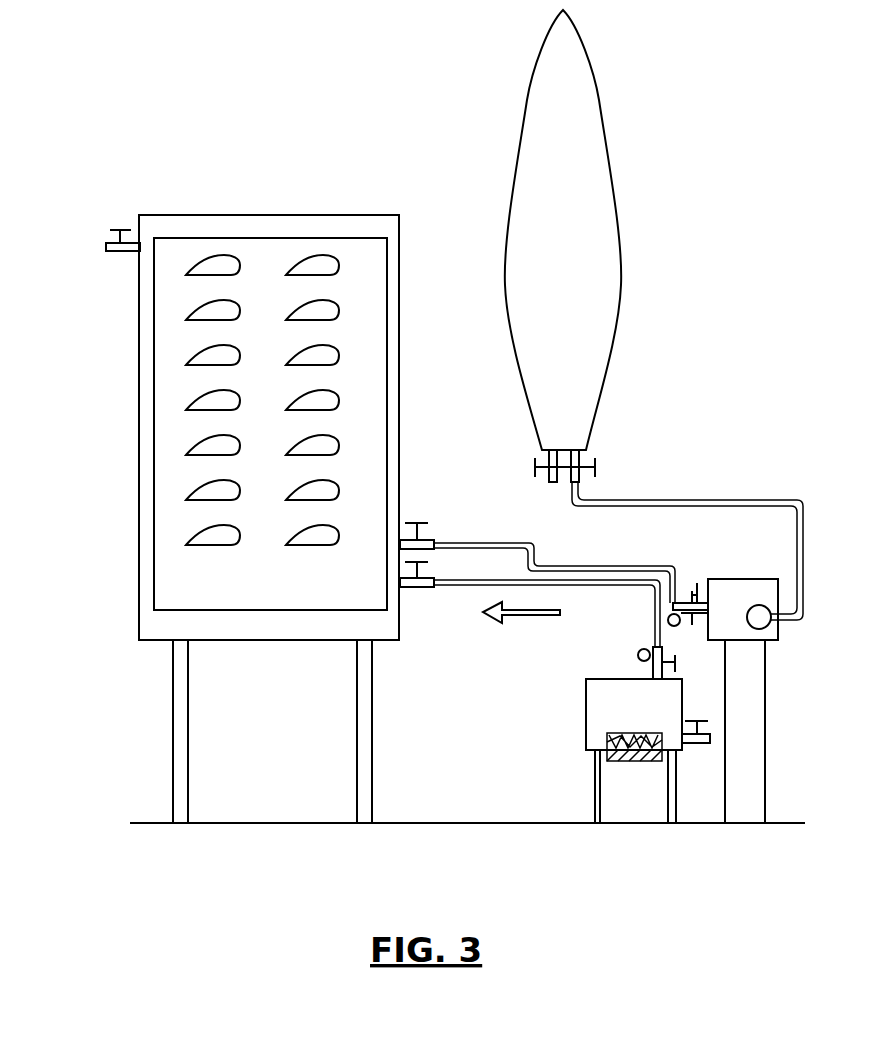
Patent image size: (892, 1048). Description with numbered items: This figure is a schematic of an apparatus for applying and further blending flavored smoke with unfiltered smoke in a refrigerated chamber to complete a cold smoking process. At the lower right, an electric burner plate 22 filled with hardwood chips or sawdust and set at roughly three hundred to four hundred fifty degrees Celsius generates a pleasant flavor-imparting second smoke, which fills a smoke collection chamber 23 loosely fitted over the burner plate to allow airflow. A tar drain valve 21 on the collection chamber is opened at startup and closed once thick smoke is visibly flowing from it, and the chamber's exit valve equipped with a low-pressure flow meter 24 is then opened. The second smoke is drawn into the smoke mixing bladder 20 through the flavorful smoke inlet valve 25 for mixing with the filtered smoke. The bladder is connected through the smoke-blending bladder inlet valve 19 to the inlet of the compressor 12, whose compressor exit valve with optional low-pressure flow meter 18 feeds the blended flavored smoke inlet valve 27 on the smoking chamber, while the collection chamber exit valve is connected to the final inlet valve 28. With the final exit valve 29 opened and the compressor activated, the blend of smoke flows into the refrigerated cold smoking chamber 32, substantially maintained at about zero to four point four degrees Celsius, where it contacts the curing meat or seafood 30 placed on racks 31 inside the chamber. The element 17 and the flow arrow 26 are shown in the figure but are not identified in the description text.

The compressor 12 is at (752, 580).
The valve stem 17 is at (695, 582).
The compressor exit valve with optional low-pressure flow meter 18 is at (678, 601).
The smoke-blending bladder inlet valve 19 is at (598, 462).
The smoke mixing bladder 20 is at (563, 230).
The tar drain valve 21 is at (700, 745).
The electric burner plate 22 is at (610, 758).
The smoke collection chamber 23 is at (634, 751).
The smoke collection chamber exit valve equipped with a low-pressure flow meter 24 is at (638, 657).
The flavorful smoke inlet valve 25 is at (535, 463).
The flow direction arrow 26 is at (508, 617).
The blended flavored smoke inlet valve 27 is at (420, 522).
The final inlet valve 28 is at (417, 588).
The final exit valve 29 is at (106, 246).
The curing meat or seafood 30 is at (316, 255).
The racks 31 is at (175, 371).
The refrigerated cold smoking chamber 32 is at (269, 519).